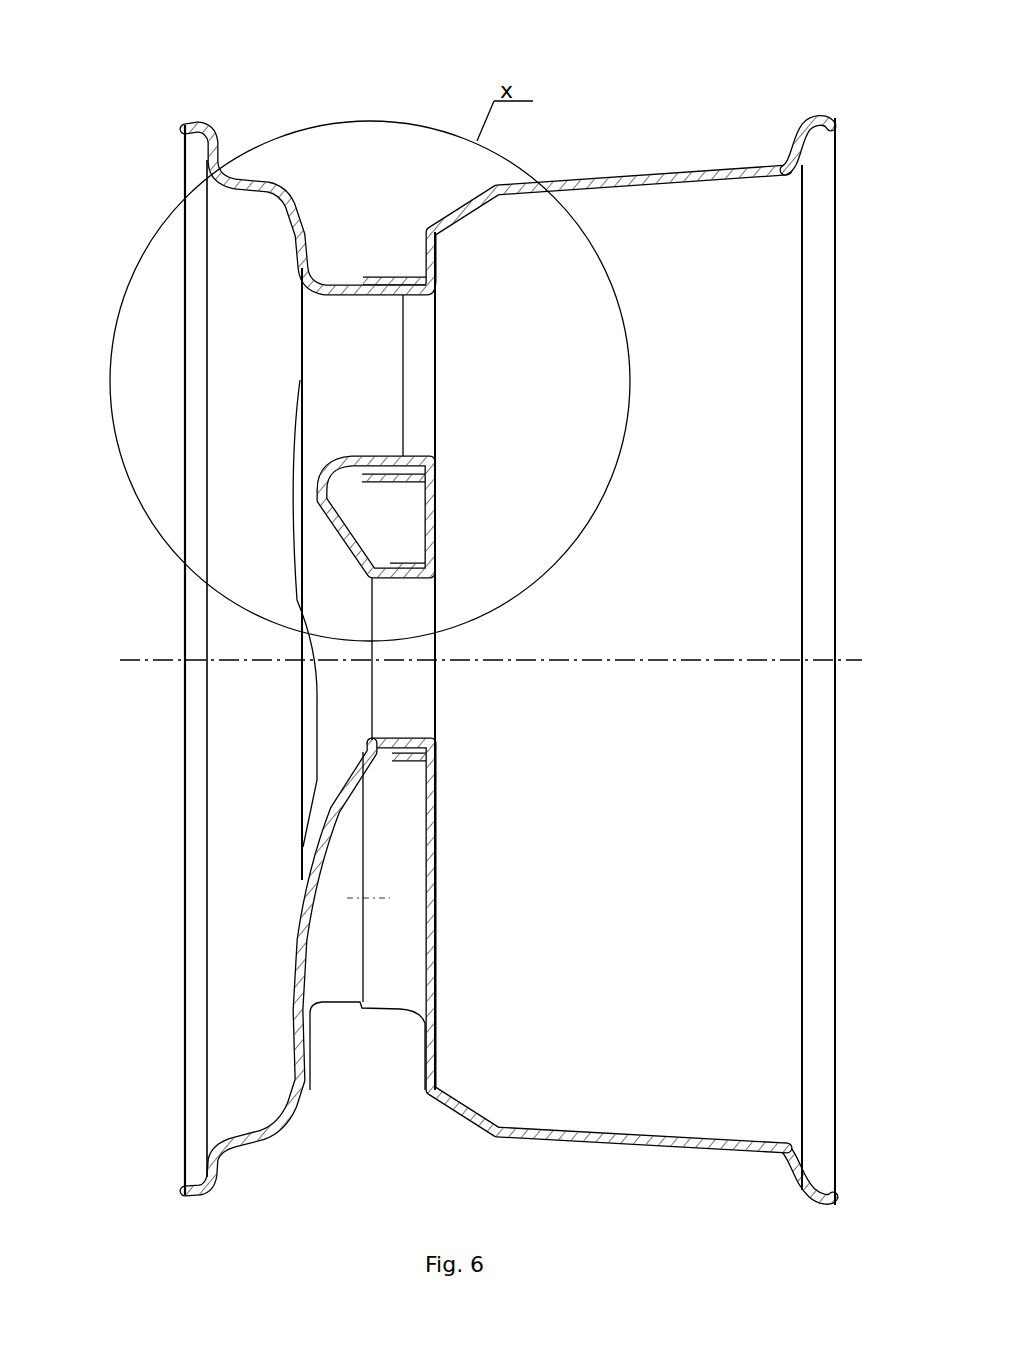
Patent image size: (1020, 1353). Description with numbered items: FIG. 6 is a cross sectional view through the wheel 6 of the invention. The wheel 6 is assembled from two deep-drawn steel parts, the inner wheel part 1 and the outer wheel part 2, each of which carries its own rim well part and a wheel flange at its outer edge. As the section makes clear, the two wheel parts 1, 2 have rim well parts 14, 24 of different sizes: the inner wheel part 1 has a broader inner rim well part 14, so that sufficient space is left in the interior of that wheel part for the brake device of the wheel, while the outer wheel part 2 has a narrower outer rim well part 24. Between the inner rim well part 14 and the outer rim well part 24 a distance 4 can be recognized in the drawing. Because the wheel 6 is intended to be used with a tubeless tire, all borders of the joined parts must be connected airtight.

The inner wheel part 1 is at (845, 245).
The outer wheel part 2 is at (170, 178).
The distance 4 is at (370, 1073).
The wheel 6 is at (648, 101).
The inner rim well part 14 is at (643, 1145).
The outer rim well part 24 is at (252, 1143).